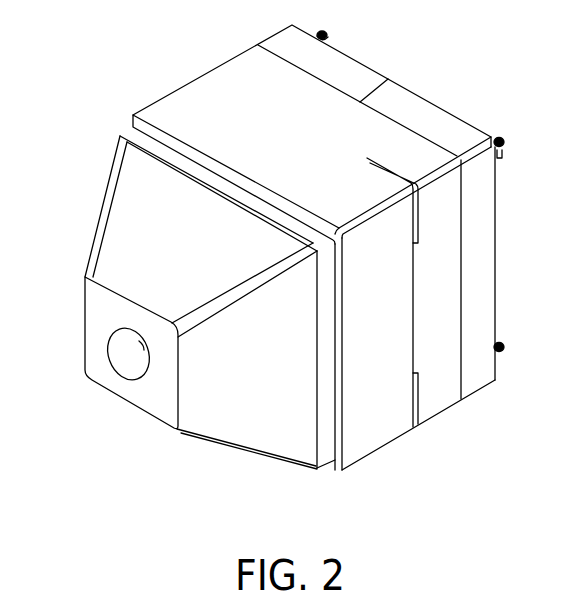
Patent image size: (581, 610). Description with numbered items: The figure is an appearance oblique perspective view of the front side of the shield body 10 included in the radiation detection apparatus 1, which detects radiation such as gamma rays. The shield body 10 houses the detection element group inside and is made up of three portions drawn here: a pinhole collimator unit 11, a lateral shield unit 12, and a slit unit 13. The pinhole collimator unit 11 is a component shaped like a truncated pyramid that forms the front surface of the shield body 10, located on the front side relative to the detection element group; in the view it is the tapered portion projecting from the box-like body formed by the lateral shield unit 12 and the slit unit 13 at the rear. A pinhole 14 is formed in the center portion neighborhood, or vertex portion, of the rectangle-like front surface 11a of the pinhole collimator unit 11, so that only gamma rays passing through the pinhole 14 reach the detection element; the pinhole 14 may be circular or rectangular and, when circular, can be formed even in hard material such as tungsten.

The radiation detection apparatus 1 is at (494, 449).
The shield body 10 is at (378, 72).
The pinhole collimator unit 11 is at (245, 450).
The front surface 11a is at (100, 315).
The lateral shield unit 12 is at (443, 412).
The slit unit 13 is at (485, 387).
The pinhole 14 is at (133, 381).